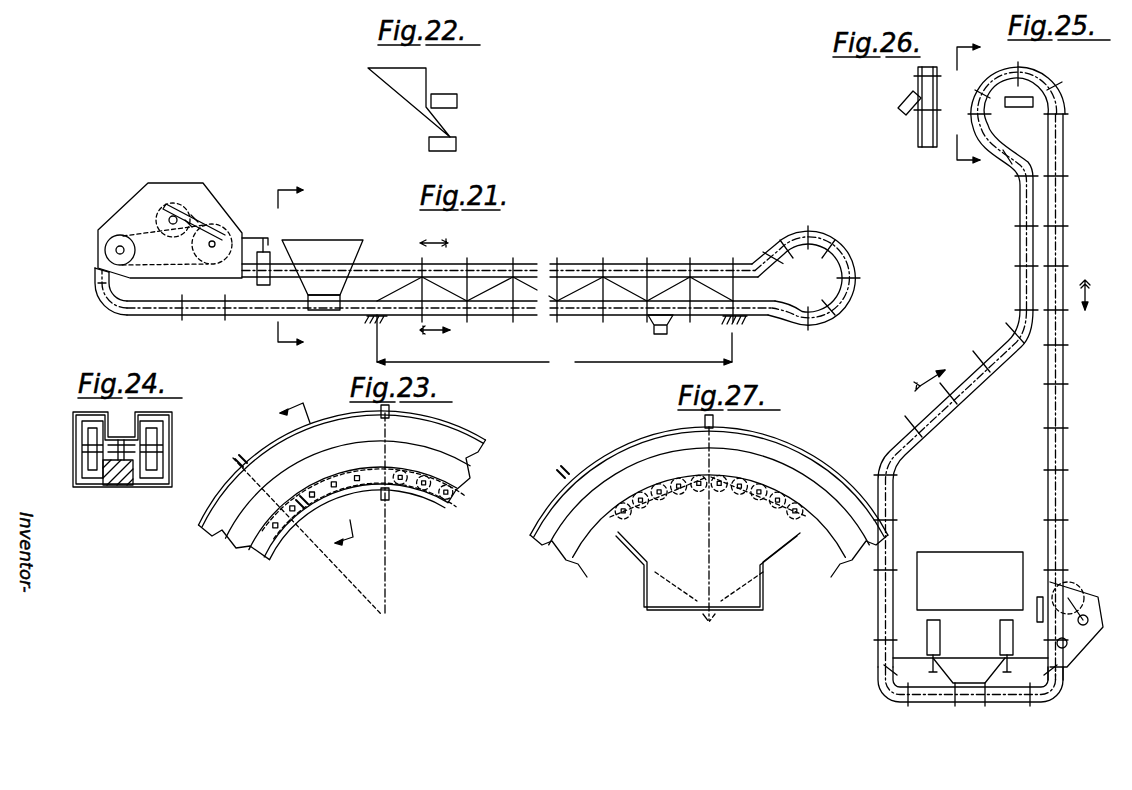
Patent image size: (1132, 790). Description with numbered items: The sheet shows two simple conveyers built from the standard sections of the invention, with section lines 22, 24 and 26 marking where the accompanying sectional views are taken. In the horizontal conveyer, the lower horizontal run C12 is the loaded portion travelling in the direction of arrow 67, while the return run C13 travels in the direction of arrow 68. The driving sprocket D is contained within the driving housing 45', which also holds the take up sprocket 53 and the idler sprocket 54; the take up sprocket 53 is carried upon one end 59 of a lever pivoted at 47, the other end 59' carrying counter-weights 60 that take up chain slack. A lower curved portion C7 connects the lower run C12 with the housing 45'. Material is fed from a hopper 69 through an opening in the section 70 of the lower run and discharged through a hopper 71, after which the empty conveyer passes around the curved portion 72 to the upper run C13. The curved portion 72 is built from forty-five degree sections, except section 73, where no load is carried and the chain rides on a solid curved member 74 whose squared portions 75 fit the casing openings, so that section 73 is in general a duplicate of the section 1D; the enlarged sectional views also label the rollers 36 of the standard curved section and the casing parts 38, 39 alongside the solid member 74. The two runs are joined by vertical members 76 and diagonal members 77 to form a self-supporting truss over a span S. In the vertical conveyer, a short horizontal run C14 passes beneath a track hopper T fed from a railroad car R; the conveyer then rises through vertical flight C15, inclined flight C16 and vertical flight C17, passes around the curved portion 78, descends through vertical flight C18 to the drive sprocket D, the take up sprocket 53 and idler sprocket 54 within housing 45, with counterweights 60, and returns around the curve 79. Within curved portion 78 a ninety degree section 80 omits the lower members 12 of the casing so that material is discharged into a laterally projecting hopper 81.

In FIG. 21, the lower curved portion C7 is at (97, 287).
In FIG. 21, the lower horizontal run C12 is at (352, 316).
In FIG. 22, the lower horizontal run C12 is at (456, 145).
In FIG. 21, the return run C13 is at (482, 264).
In FIG. 22, the return run C13 is at (457, 101).
In FIG. 25, the short horizontal run C14 is at (932, 702).
In FIG. 25, the vertical flight C15 is at (878, 580).
In FIG. 25, the inclined flight C16 is at (965, 375).
In FIG. 25, the vertical flight C17 is at (1018, 244).
In FIG. 25, the vertical flight C18 is at (1064, 371).
In FIG. 25, the driving mechanism housing 45 is at (1079, 625).
In FIG. 21, the driving housing 45' is at (170, 213).
In FIG. 21, the lever pivot 47 is at (198, 251).
In FIG. 21, the take up sprocket 53 is at (165, 215).
In FIG. 25, the take up sprocket 53 is at (1085, 616).
In FIG. 21, the idler sprocket 54 is at (136, 249).
In FIG. 25, the idler sprocket 54 is at (1066, 650).
In FIG. 21, the lever end 59 is at (194, 200).
In FIG. 21, the lever end 59' is at (262, 227).
In FIG. 21, the counter-weights 60 is at (273, 280).
In FIG. 25, the counter-weights 60 is at (1037, 620).
In FIG. 21, the arrow 67 is at (435, 341).
In FIG. 21, the arrow 68 is at (435, 234).
In FIG. 21, the hopper 69 is at (325, 243).
In FIG. 22, the hopper 69 is at (382, 92).
In FIG. 21, the section of lower run 70 is at (346, 287).
In FIG. 21, the discharge hopper 71 is at (670, 332).
In FIG. 21, the curved portion 72 is at (848, 258).
In FIG. 21, the 45 degree section 73 is at (792, 238).
In FIG. 23, the 45 degree section 73 is at (295, 450).
In FIG. 24, the solid curved member 74 is at (122, 486).
In FIG. 23, the solid curved member 74 is at (345, 472).
In FIG. 24, the squared portions 75 is at (103, 478).
In FIG. 23, the squared portions 75 is at (310, 490).
In FIG. 21, the vertical members 76 is at (548, 298).
In FIG. 21, the diagonal members 77 is at (571, 303).
In FIG. 25, the curved portion 78 is at (1063, 92).
In FIG. 25, the curve 79 is at (1052, 697).
In FIG. 25, the 90 degree section 80 is at (1003, 70).
In FIG. 27, the hopper 81 is at (764, 600).
In FIG. 26, the hopper 81 is at (902, 96).
In FIG. 25, the hopper 81 is at (1012, 108).
In FIG. 23, the lower members of conveyer casing 12 is at (270, 556).
In FIG. 27, the lower members of conveyer casing 12 is at (590, 562).
In FIG. 23, the section 1D is at (452, 416).
In FIG. 27, the section 1D is at (625, 445).
In FIG. 23, the conveyor rollers 36 is at (438, 485).
In FIG. 27, the conveyor rollers 36 is at (662, 490).
In FIG. 24, the rail casing 38 is at (97, 488).
In FIG. 24, the rail channel 39 is at (157, 486).
In FIG. 23, the rail channel 39 is at (333, 508).
In FIG. 21, the section line 22 is at (276, 266).
In FIG. 23, the section line 24 is at (307, 500).
In FIG. 25, the section line 26 is at (960, 104).
In FIG. 21, the driving sprocket D is at (222, 222).
In FIG. 25, the driving sprocket D is at (1070, 588).
In FIG. 25, the railroad car R is at (970, 581).
In FIG. 21, the span S is at (554, 344).
In FIG. 25, the track hopper T is at (967, 656).